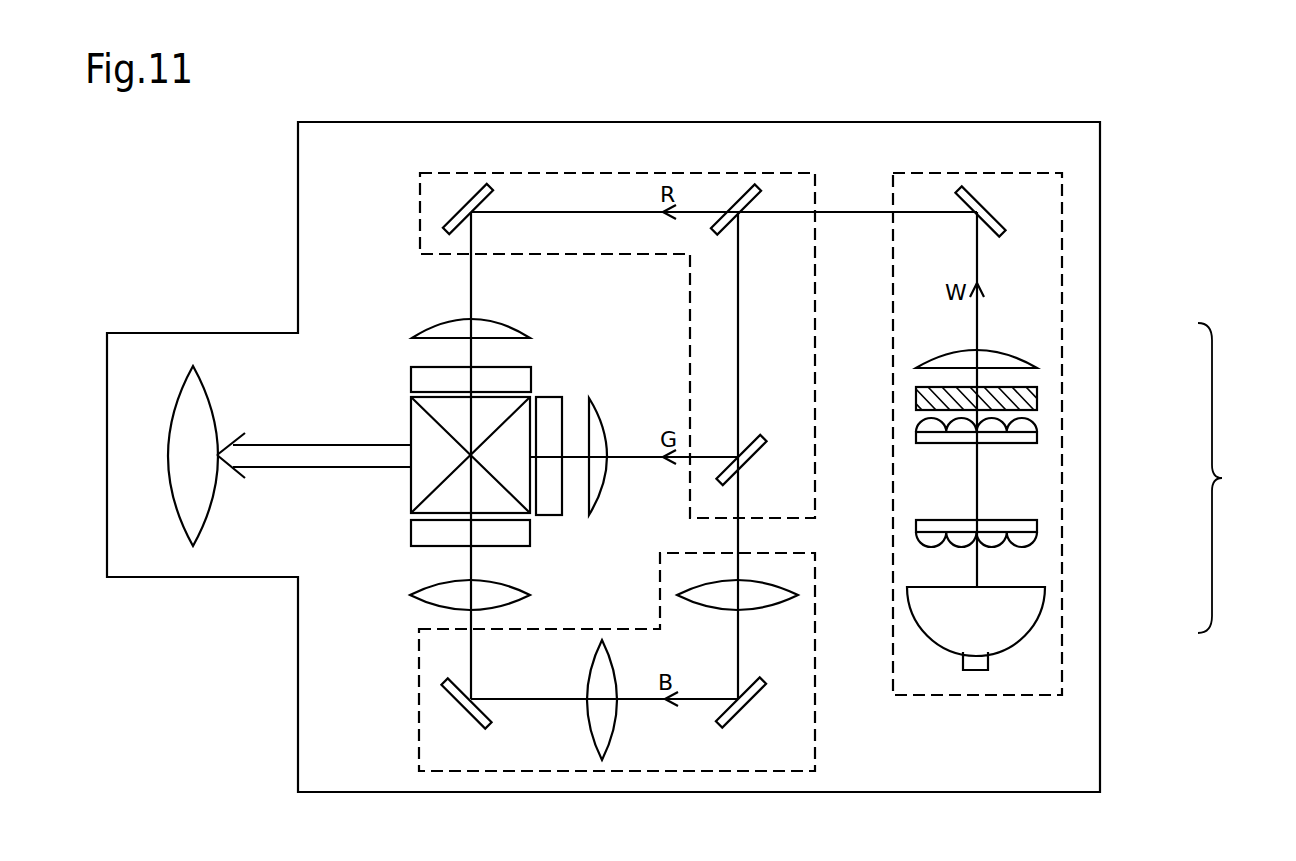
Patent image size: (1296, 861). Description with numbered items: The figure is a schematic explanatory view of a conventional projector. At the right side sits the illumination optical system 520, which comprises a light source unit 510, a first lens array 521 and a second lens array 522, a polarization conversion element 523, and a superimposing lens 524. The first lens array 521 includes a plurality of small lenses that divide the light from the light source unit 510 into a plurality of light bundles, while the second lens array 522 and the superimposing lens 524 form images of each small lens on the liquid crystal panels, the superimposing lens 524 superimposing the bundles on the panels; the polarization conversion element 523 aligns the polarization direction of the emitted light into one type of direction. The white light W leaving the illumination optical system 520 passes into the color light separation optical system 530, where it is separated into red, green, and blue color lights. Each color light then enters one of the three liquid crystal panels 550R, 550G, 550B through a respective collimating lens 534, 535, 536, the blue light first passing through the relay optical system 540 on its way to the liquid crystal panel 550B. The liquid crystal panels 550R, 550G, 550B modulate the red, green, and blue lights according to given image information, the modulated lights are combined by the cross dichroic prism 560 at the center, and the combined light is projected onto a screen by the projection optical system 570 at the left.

The light source unit 510 is at (1045, 613).
The illumination optical system 520 is at (1084, 434).
The first lens array 521 is at (1037, 525).
The second lens array 522 is at (1037, 437).
The polarization conversion element 523 is at (1037, 398).
The superimposing lens 524 is at (1020, 357).
The color light separation optical system 530 is at (590, 172).
The collimating lens 534 is at (497, 320).
The collimating lens 535 is at (605, 427).
The collimating lens 536 is at (425, 603).
The relay optical system 540 is at (543, 772).
The liquid crystal panel 550R is at (532, 380).
The liquid crystal panel 550G is at (547, 515).
The liquid crystal panel 550B is at (411, 535).
The cross dichroic prism 560 is at (410, 427).
The projection optical system 570 is at (177, 395).